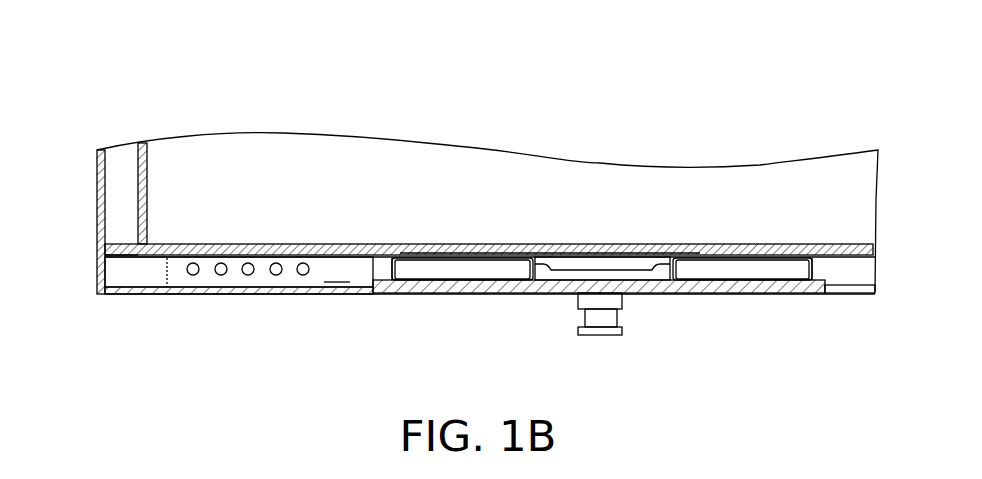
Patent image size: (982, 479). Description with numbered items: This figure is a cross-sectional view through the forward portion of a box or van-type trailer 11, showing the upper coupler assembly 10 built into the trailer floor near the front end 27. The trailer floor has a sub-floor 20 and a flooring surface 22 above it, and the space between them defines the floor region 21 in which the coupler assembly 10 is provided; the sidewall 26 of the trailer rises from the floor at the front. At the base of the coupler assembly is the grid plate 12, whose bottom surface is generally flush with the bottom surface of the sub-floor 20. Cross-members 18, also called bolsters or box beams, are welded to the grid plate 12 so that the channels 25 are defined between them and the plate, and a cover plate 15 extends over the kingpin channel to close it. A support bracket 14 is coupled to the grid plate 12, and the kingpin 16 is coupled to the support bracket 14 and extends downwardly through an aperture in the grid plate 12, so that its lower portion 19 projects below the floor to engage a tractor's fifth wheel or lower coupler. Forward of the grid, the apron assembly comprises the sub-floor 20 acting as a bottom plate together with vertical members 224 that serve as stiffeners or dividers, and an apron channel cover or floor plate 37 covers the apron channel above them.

The upper coupler assembly 10 is at (150, 62).
The trailer 11 is at (803, 125).
The grid plate 12 is at (725, 290).
The support bracket 14 is at (640, 285).
The cover plate 15 is at (550, 253).
The kingpin 16 is at (602, 340).
The cross-member 18 is at (385, 268).
The lower portion of kingpin 19 is at (583, 312).
The sub-floor 20 is at (203, 295).
The floor region 21 is at (337, 271).
The flooring surface 22 is at (262, 244).
The vertical members 224 is at (260, 277).
The channel 25 is at (480, 272).
The sidewall 26 is at (95, 187).
The front end 27 is at (97, 247).
The apron channel cover 37 is at (100, 256).